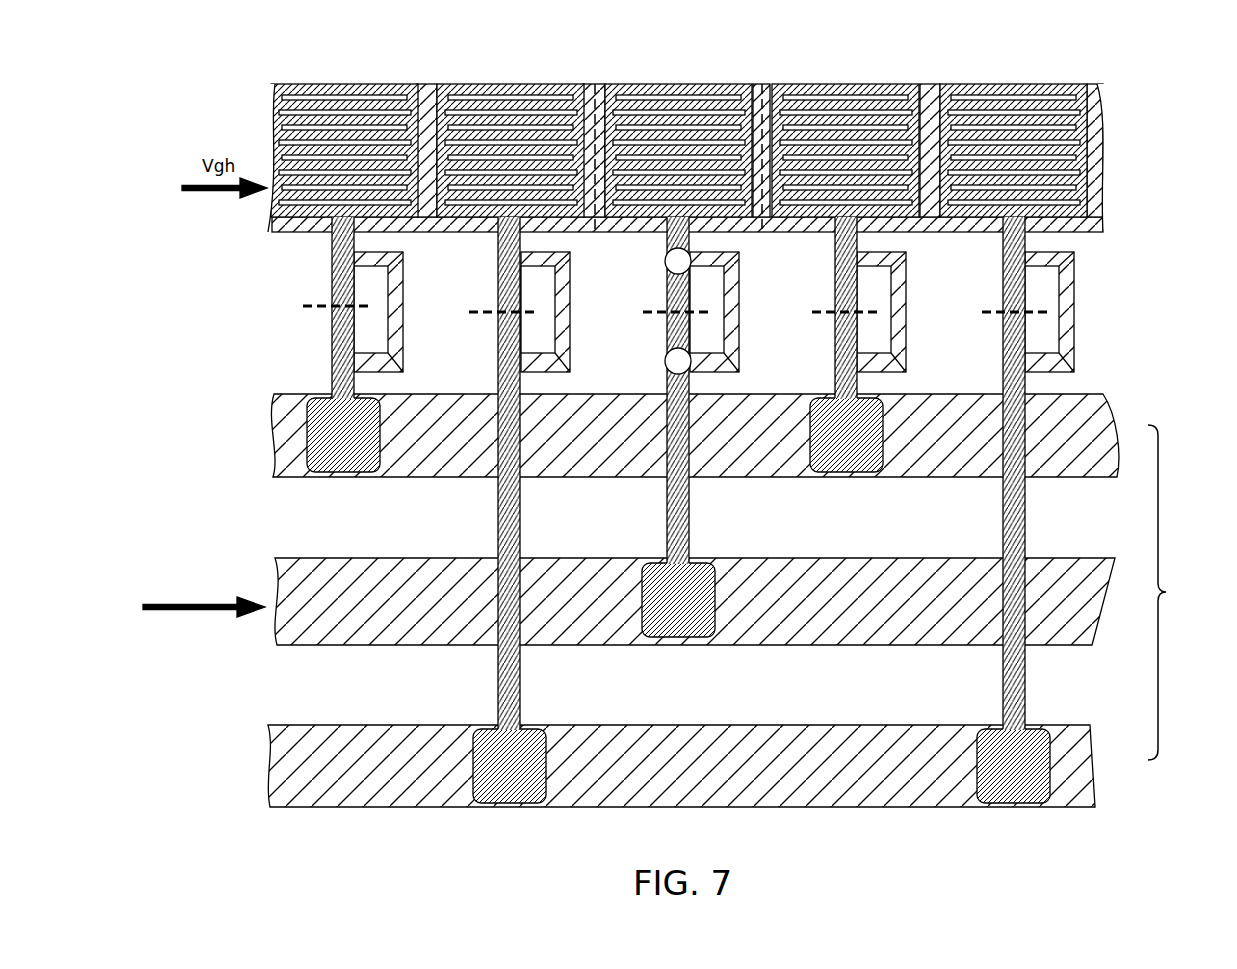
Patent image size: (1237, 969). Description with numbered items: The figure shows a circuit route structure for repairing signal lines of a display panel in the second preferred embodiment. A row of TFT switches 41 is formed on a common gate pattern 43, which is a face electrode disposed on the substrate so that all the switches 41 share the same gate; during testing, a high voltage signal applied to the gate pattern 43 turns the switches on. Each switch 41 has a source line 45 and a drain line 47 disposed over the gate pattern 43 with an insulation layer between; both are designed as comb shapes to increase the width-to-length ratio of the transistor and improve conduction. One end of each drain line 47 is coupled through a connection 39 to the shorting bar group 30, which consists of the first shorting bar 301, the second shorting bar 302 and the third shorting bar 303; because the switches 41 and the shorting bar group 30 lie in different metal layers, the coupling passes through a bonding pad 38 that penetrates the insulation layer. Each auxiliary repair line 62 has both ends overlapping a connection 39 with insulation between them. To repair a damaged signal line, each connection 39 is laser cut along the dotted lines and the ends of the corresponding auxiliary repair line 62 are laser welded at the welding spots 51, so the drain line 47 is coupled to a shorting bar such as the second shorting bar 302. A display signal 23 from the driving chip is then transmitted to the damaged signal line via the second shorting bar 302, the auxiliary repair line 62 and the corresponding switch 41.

The switch 41 is at (1021, 79).
The gate pattern 43 is at (305, 225).
The source line 45 is at (606, 98).
The drain line 47 is at (762, 86).
The connection 39 is at (332, 345).
The welding spot 51 is at (665, 259).
The auxiliary repair line 62 is at (740, 293).
The first shorting bar 301 is at (277, 423).
The second shorting bar 302 is at (365, 645).
The third shorting bar 303 is at (268, 773).
The bonding pad 38 is at (642, 590).
The shorting bar group 30 is at (1173, 592).
The display signal 23 is at (217, 617).